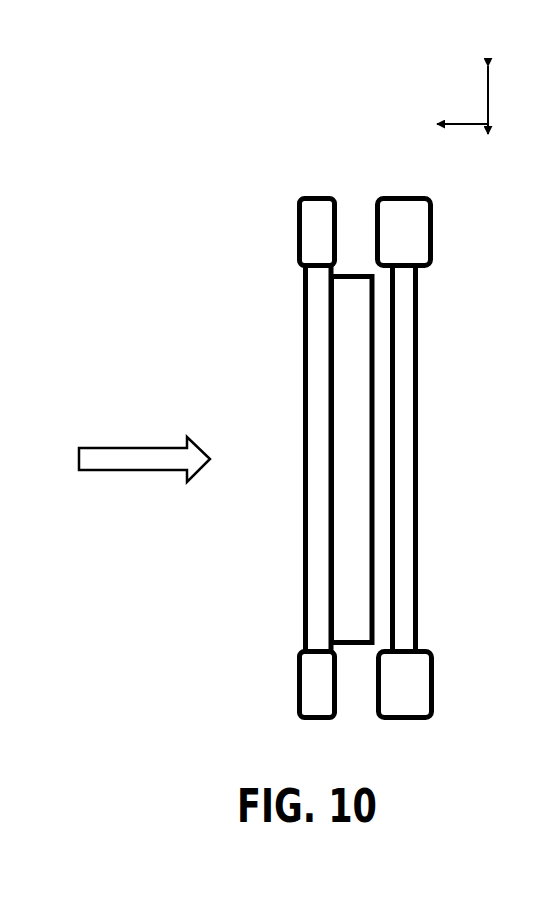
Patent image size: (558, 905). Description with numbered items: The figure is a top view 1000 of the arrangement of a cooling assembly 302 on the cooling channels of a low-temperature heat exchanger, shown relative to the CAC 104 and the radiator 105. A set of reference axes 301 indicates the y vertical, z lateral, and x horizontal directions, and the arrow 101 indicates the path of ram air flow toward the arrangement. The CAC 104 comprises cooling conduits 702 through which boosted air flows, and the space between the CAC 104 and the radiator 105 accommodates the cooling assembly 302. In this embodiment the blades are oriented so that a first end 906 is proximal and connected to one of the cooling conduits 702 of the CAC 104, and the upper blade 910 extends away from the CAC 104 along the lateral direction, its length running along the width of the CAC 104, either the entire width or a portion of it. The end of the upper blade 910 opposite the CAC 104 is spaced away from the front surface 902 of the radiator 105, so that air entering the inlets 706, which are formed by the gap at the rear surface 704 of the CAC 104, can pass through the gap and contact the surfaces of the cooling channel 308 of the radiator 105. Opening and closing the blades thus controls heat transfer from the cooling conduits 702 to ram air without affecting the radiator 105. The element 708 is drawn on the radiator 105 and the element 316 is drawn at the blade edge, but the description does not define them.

The top view 1000 is at (224, 103).
The reference axes 301 is at (440, 70).
The cooling assembly 302 is at (345, 153).
The CAC 104 is at (239, 208).
The radiator 105 is at (478, 208).
The inlets 706 is at (365, 195).
The second electrode tab 708 is at (433, 240).
The cooling conduits 702 is at (304, 380).
The rear surface 704 is at (330, 560).
The first end 906 is at (328, 315).
The front surface 902 is at (395, 347).
The cooling channel 308 is at (420, 468).
The upper blade 910 is at (366, 452).
The separator edge 316 is at (374, 580).
The arrow 101 is at (150, 471).